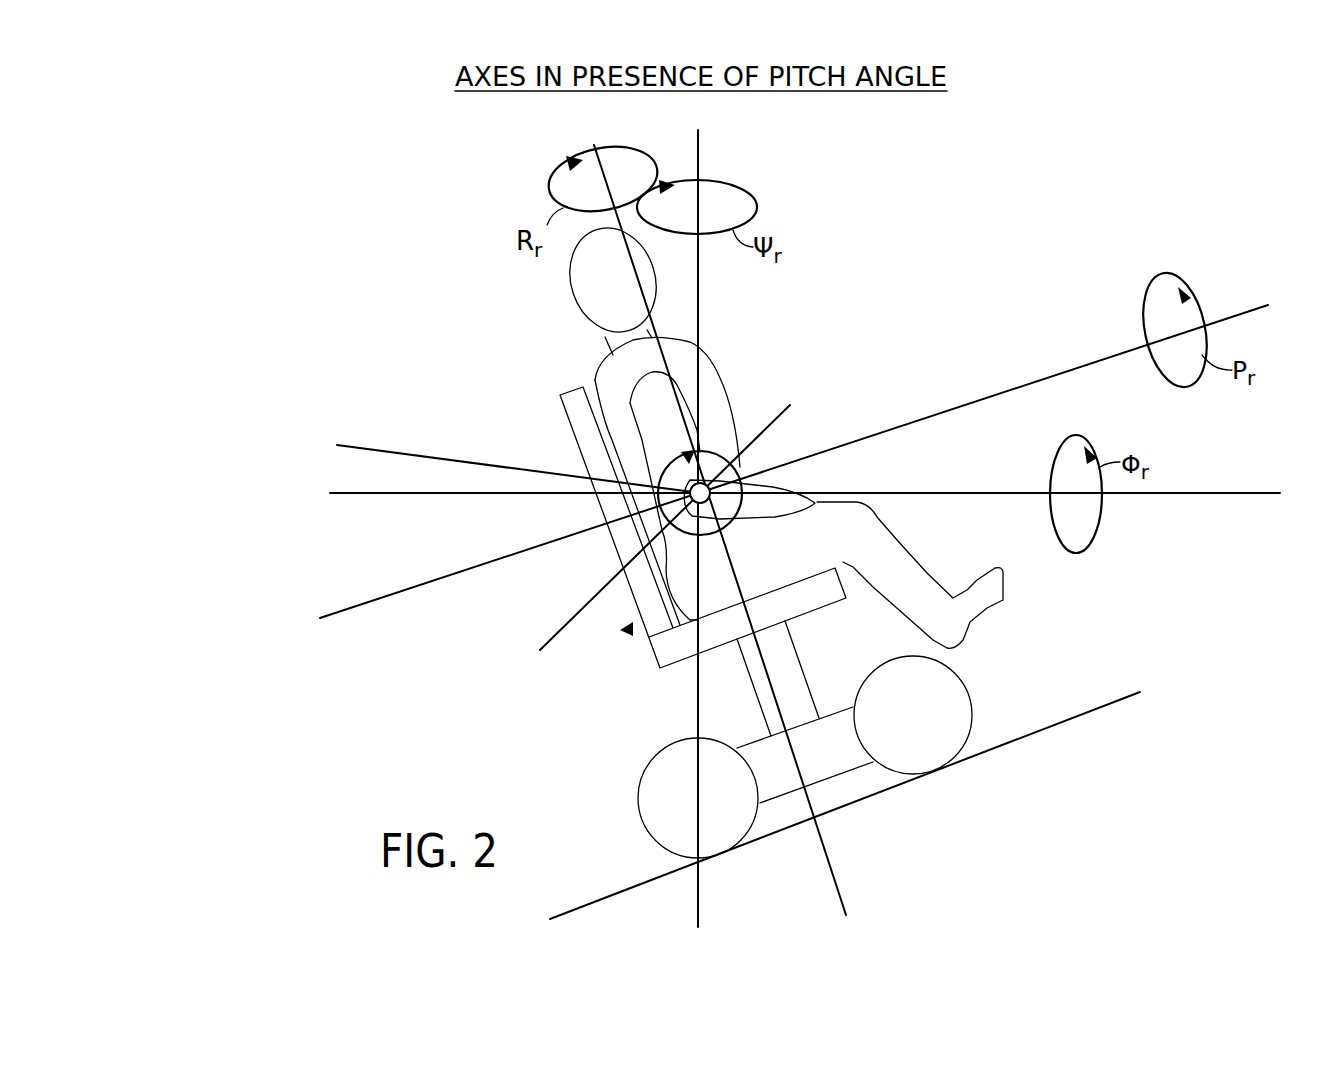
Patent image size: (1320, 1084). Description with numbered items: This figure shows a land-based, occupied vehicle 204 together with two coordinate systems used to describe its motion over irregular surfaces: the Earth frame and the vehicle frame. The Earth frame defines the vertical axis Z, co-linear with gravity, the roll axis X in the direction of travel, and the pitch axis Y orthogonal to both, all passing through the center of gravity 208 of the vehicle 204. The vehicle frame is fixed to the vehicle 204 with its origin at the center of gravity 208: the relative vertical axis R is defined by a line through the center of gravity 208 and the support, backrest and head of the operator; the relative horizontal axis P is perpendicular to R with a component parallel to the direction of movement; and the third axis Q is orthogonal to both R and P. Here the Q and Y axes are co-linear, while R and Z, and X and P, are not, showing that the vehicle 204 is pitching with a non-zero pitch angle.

The vehicle 204 is at (630, 627).
The center of gravity 208 is at (707, 501).
The roll axis X is at (821, 496).
The pitch axis Y is at (688, 523).
The vertical axis Z is at (712, 525).
The relative horizontal axis P is at (786, 461).
The third axis Q is at (394, 475).
The relative vertical axis R is at (737, 539).